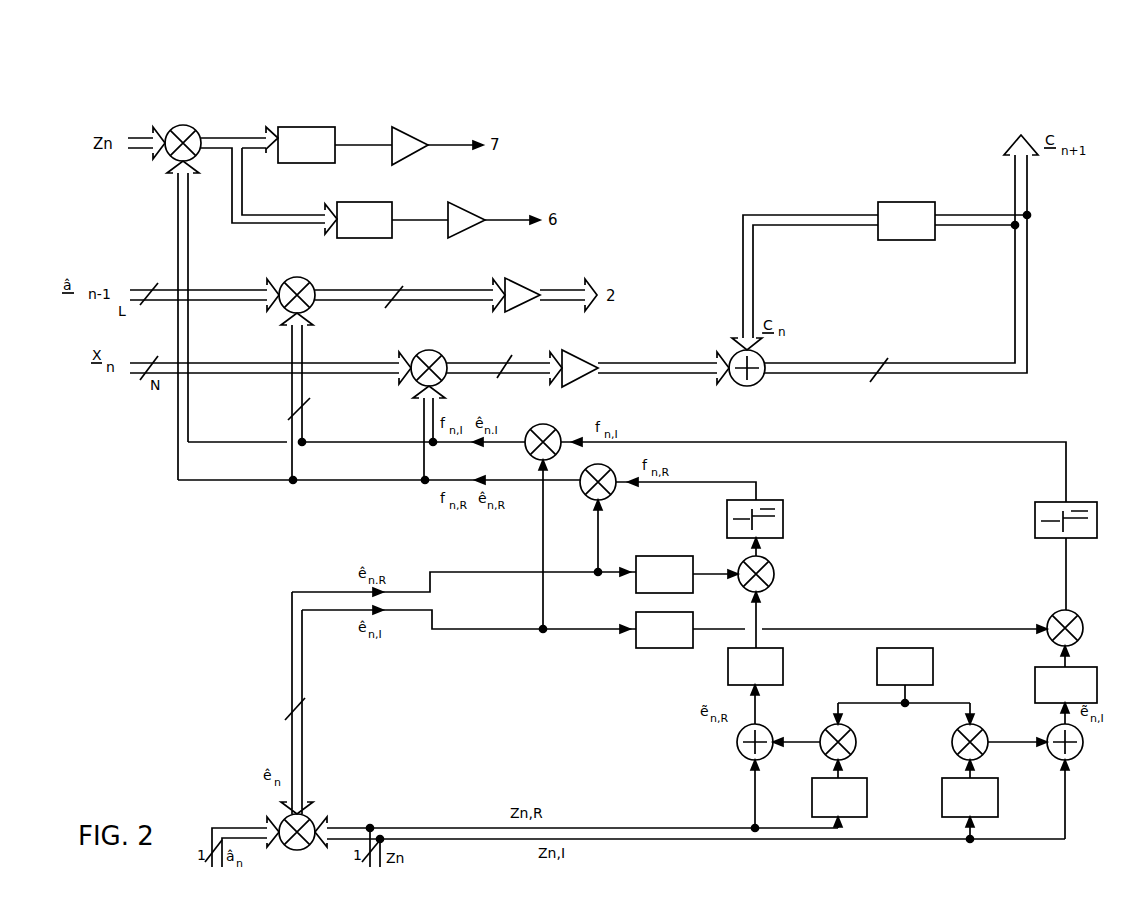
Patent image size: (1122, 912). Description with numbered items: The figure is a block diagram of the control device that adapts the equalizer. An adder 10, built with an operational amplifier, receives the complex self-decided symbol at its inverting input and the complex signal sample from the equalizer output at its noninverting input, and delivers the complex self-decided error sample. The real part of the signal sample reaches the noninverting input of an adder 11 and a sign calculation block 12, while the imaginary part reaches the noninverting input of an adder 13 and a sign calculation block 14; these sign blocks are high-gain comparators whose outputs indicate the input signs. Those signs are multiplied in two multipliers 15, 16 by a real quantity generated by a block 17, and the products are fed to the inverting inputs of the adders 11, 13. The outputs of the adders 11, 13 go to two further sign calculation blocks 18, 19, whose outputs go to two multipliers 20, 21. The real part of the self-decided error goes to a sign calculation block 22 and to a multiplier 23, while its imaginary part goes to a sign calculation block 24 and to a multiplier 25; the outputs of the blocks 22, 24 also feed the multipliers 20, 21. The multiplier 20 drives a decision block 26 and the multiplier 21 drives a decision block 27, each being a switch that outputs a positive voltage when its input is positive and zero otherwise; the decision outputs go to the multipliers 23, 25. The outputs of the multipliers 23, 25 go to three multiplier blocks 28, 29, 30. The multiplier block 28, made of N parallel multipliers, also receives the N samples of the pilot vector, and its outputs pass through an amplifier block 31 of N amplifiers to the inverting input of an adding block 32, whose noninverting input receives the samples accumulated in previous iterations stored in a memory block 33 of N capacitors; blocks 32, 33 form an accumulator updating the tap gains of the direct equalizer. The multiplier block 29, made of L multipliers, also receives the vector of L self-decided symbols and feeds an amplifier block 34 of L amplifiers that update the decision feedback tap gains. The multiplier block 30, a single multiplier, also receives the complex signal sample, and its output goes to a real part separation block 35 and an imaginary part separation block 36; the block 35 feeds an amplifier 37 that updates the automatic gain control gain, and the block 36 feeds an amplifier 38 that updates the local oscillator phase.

The adder 10 is at (635, 729).
The adder 11 is at (750, 756).
The sign calculation block 12 is at (851, 794).
The adder 13 is at (1068, 781).
The sign calculation block 14 is at (982, 799).
The multiplier 15 is at (826, 742).
The multiplier 16 is at (987, 742).
The block 17 is at (904, 686).
The sign calculation block 18 is at (768, 638).
The sign calculation block 19 is at (1078, 695).
The multiplier 20 is at (768, 565).
The multiplier 21 is at (1077, 638).
The sign calculation block 22 is at (687, 564).
The multiplier 23 is at (590, 518).
The sign calculation block 24 is at (841, 642).
The multiplier 25 is at (543, 515).
The decision block 26 is at (768, 519).
The decision block 27 is at (1078, 556).
The multiplier block 28 is at (288, 406).
The multiplier block 29 is at (222, 369).
The multiplier block 30 is at (164, 294).
The amplifier block 31 is at (588, 361).
The adding block 32 is at (878, 309).
The memory block 33 is at (910, 205).
The amplifier block 34 is at (456, 291).
The real part separation block 35 is at (364, 209).
The imaginary part separation block 36 is at (269, 170).
The amplifier 37 is at (466, 209).
The amplifier 38 is at (409, 135).